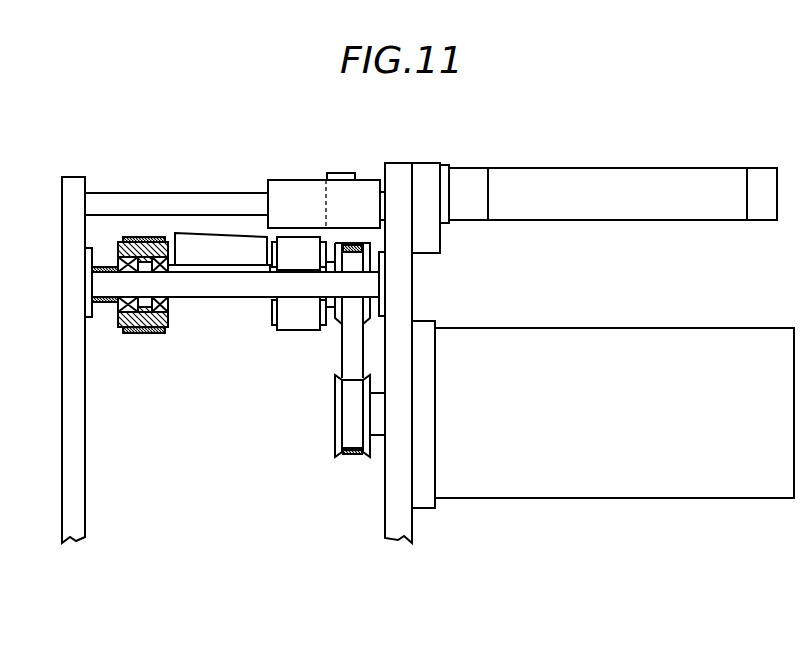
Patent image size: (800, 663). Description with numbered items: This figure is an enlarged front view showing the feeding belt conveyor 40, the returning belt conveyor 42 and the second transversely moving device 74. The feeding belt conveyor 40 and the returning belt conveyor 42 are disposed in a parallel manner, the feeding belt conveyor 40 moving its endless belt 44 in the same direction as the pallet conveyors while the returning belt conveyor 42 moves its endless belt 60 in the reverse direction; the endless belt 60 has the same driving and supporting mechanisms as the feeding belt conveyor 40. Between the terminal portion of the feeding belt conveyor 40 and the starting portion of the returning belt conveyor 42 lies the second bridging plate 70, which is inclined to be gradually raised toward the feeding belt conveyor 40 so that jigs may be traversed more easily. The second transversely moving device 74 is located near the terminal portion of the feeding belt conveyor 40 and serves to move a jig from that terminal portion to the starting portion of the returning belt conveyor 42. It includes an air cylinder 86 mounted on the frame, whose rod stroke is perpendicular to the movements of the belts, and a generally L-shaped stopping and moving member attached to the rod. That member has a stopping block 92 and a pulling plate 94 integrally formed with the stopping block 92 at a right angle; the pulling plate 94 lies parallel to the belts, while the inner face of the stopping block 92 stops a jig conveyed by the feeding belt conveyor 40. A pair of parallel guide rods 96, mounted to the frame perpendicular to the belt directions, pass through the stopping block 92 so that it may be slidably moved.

The feeding belt conveyor 40 is at (288, 336).
The returning belt conveyor 42 is at (144, 336).
The endless belt 44 is at (293, 238).
The endless belt 60 is at (131, 237).
The second bridging plate 70 is at (215, 235).
The second transversely moving device 74 is at (667, 155).
The air cylinder 86 is at (601, 173).
The stopping block 92 is at (363, 185).
The pulling plate 94 is at (338, 172).
The guide rods 96 is at (166, 200).